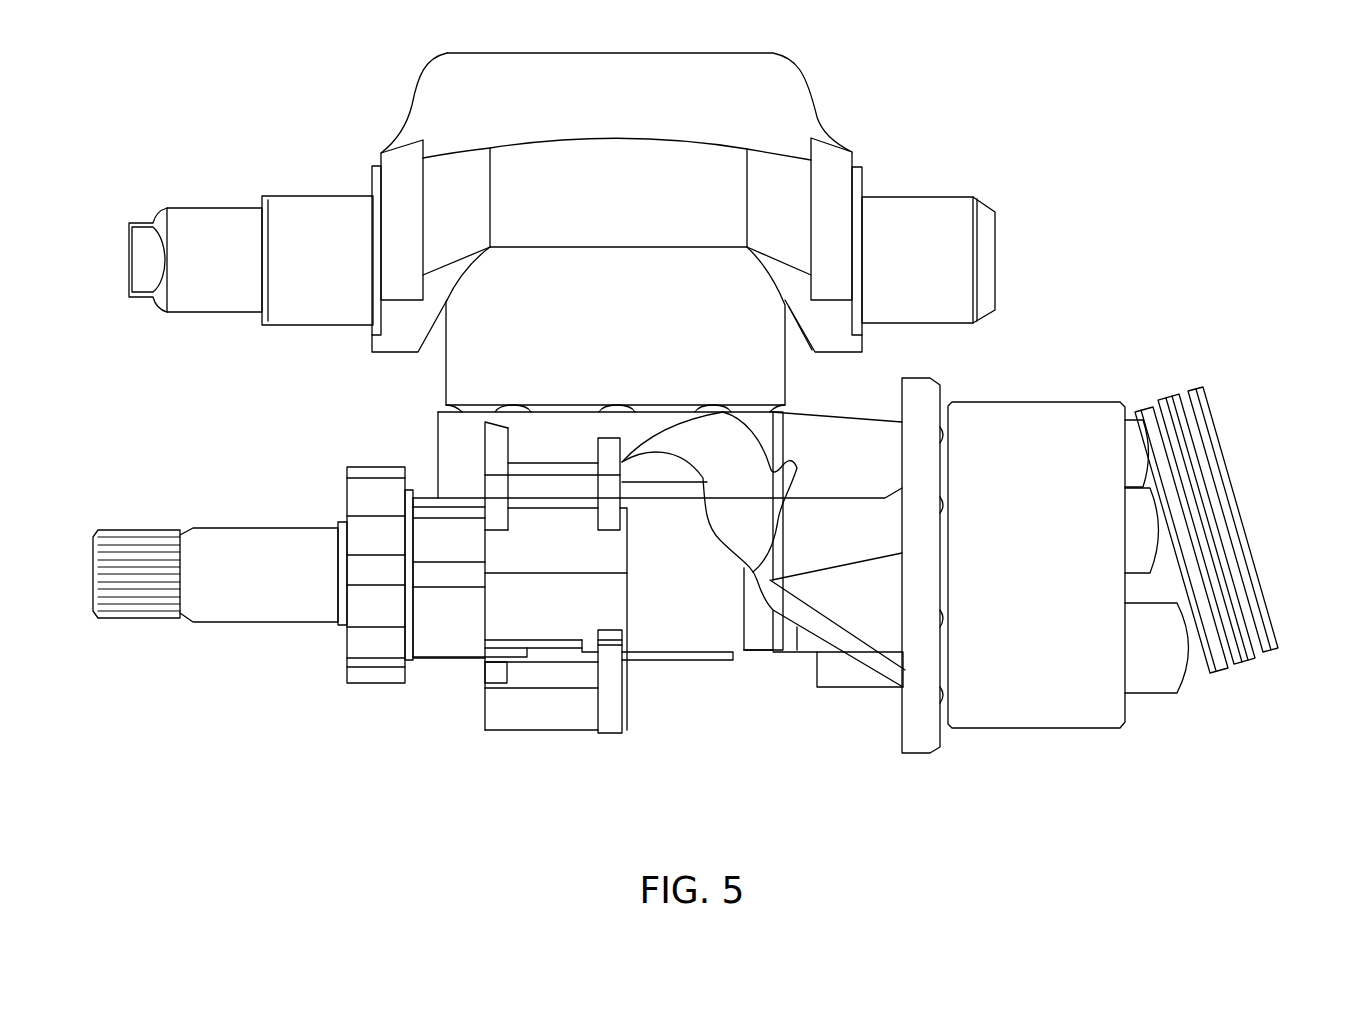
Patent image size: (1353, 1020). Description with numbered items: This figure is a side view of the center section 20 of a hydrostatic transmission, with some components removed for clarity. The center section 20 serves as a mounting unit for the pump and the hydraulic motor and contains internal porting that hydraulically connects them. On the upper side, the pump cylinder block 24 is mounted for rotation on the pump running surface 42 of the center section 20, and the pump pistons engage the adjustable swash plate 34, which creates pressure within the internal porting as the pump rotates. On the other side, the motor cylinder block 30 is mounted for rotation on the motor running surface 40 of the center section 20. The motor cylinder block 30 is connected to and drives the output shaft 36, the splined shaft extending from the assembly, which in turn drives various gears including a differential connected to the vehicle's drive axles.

The center section 20 is at (673, 608).
The pump cylinder block 24 is at (603, 344).
The motor cylinder block 30 is at (1023, 571).
The adjustable swash plate 34 is at (603, 102).
The output shaft 36 is at (274, 583).
The motor running surface 40 is at (941, 732).
The pump running surface 42 is at (446, 410).